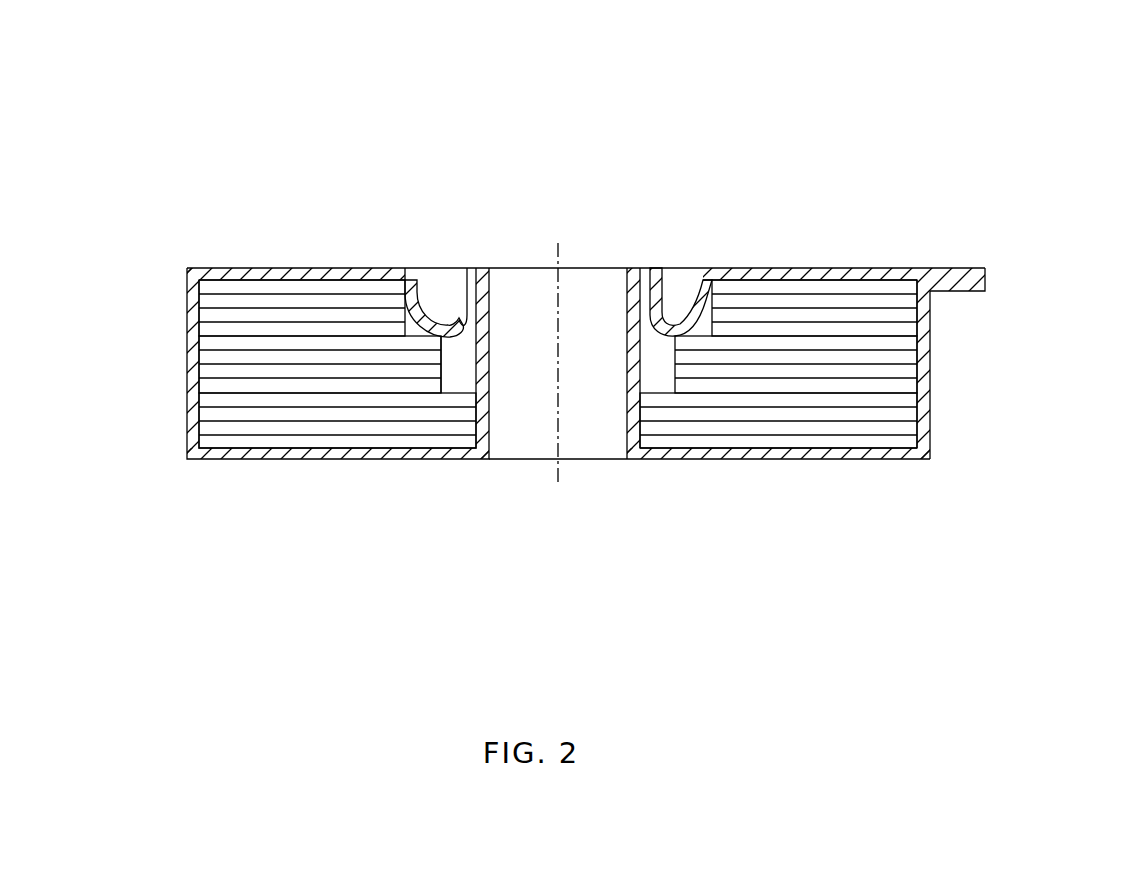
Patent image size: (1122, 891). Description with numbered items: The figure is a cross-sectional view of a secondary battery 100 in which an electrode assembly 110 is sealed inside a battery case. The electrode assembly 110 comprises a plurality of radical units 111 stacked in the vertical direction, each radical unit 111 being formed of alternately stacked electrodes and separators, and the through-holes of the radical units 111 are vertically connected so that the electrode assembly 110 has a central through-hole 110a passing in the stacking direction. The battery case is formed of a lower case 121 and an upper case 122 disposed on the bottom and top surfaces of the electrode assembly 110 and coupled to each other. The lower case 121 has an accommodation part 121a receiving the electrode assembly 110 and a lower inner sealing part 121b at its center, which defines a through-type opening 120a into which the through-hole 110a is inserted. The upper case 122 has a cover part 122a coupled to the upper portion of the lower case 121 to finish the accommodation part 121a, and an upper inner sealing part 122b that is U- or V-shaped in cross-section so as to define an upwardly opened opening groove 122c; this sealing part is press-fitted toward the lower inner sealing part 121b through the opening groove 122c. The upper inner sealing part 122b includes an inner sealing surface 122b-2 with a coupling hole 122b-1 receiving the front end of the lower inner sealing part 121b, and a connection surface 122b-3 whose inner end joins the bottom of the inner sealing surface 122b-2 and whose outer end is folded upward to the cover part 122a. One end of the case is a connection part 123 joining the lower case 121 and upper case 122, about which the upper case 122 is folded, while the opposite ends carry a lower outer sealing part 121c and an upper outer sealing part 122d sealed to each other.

The secondary battery 100 is at (770, 78).
The electrode assembly 110 is at (271, 364).
The radical unit 111 is at (128, 422).
The through-hole 110a is at (451, 386).
The through-type opening 120a is at (533, 440).
The lower case 121 is at (585, 431).
The accommodation part 121a is at (756, 460).
The lower inner sealing part 121b is at (627, 430).
The lower outer sealing part 121c is at (950, 401).
The upper case 122 is at (572, 222).
The cover part 122a is at (298, 268).
The upper inner sealing part 122b is at (460, 246).
The coupling hole 122b-1 is at (606, 268).
The inner sealing surface 122b-2 is at (509, 260).
The connection surface 122b-3 is at (435, 268).
The opening groove 122c is at (680, 268).
The upper outer sealing part 122d is at (953, 223).
The connection part 123 is at (282, 218).